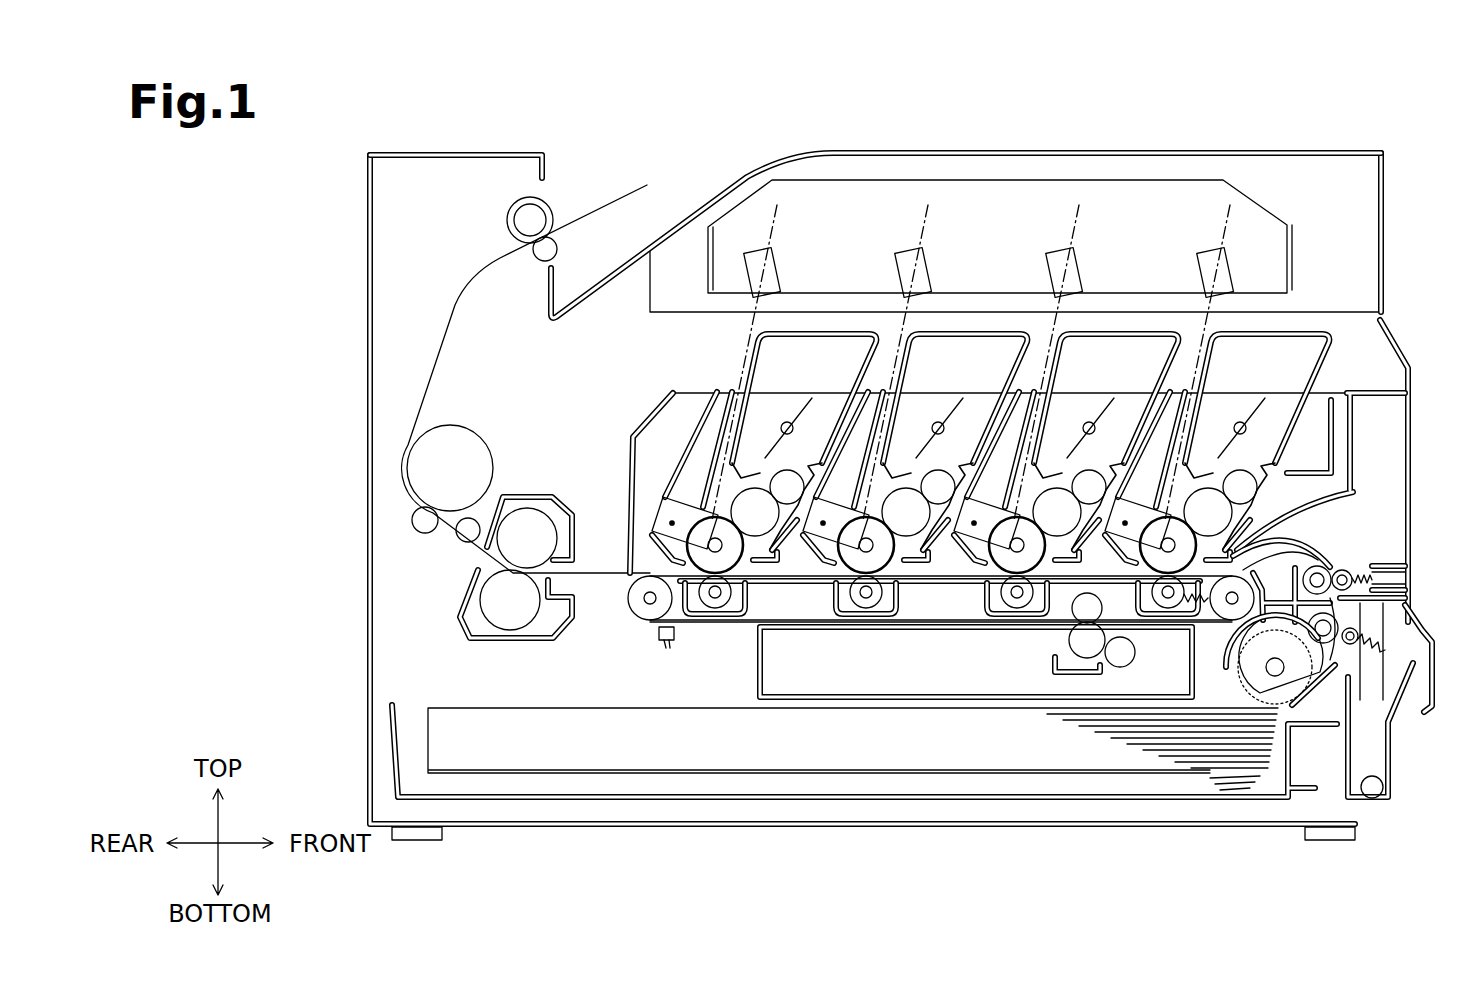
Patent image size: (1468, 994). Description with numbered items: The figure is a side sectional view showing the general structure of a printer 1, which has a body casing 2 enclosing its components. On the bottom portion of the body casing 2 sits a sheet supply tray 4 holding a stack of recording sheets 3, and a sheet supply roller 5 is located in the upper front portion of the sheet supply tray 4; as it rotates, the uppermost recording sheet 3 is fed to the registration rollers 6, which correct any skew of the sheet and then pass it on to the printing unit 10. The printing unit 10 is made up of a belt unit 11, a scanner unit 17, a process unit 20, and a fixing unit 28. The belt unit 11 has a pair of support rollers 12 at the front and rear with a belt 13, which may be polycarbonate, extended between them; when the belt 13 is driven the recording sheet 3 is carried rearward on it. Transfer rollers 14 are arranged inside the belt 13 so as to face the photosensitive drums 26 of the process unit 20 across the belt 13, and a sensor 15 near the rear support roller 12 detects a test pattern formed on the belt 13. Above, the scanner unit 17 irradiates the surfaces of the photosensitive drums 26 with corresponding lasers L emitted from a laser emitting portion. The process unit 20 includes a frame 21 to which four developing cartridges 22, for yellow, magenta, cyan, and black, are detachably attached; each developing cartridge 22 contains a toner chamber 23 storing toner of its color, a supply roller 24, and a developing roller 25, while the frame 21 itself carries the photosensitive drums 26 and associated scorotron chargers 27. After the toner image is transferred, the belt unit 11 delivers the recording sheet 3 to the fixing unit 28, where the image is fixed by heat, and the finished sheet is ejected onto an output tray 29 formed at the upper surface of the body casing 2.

The printer 1 is at (1176, 114).
The body casing 2 is at (470, 150).
The recording sheet 3 is at (1010, 748).
The sheet supply tray 4 is at (708, 800).
The sheet supply roller 5 is at (1272, 700).
The registration rollers 6 is at (1343, 570).
The printing unit 10 is at (598, 369).
The belt unit 11 is at (739, 640).
The support rollers 12 is at (631, 605).
The belt 13 is at (703, 628).
The transfer rollers 14 is at (862, 605).
The sensor 15 is at (667, 648).
The scanner unit 17 is at (1025, 180).
The process unit 20 is at (666, 381).
The frame 21 is at (627, 473).
The developing cartridges 22 is at (1013, 438).
The toner chamber 23 is at (955, 441).
The supply roller 24 is at (950, 460).
The developing roller 25 is at (919, 581).
The photosensitive drums 26 is at (881, 598).
The scorotron chargers 27 is at (836, 588).
The fixing unit 28 is at (530, 497).
The output tray 29 is at (737, 172).
The lasers L is at (925, 216).